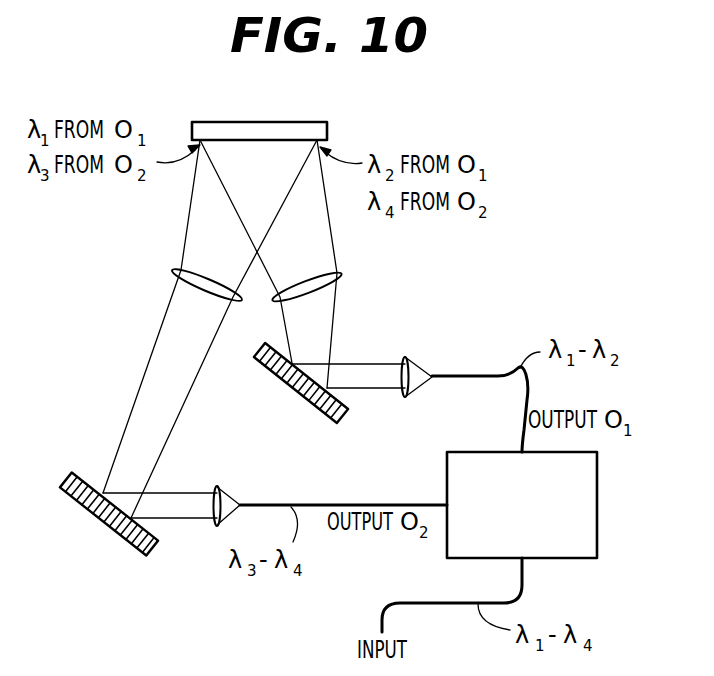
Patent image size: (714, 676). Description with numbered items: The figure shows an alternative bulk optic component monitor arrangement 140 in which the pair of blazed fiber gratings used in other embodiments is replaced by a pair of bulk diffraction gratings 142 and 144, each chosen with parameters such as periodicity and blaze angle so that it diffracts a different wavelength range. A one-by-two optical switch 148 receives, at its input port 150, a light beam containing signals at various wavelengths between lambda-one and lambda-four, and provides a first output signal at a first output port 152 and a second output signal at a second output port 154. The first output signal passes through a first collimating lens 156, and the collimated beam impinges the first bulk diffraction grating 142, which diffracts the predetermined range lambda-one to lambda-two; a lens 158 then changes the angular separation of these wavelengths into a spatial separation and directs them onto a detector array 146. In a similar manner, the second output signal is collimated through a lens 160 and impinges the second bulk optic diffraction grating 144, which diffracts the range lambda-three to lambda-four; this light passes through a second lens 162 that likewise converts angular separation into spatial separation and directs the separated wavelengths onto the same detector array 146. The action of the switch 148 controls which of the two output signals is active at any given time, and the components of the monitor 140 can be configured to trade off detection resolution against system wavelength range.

The bulk optic component monitor arrangement 140 is at (530, 272).
The first bulk diffraction grating 142 is at (281, 384).
The second bulk optic diffraction grating 144 is at (93, 516).
The detector array 146 is at (220, 120).
The 1×2 optical switch 148 is at (597, 520).
The input port 150 is at (528, 560).
The first output port 152 is at (521, 445).
The second output port 154 is at (447, 503).
The first collimating lens 156 is at (407, 357).
The lens 158 is at (344, 278).
The lens 160 is at (218, 487).
The second lens 162 is at (177, 272).